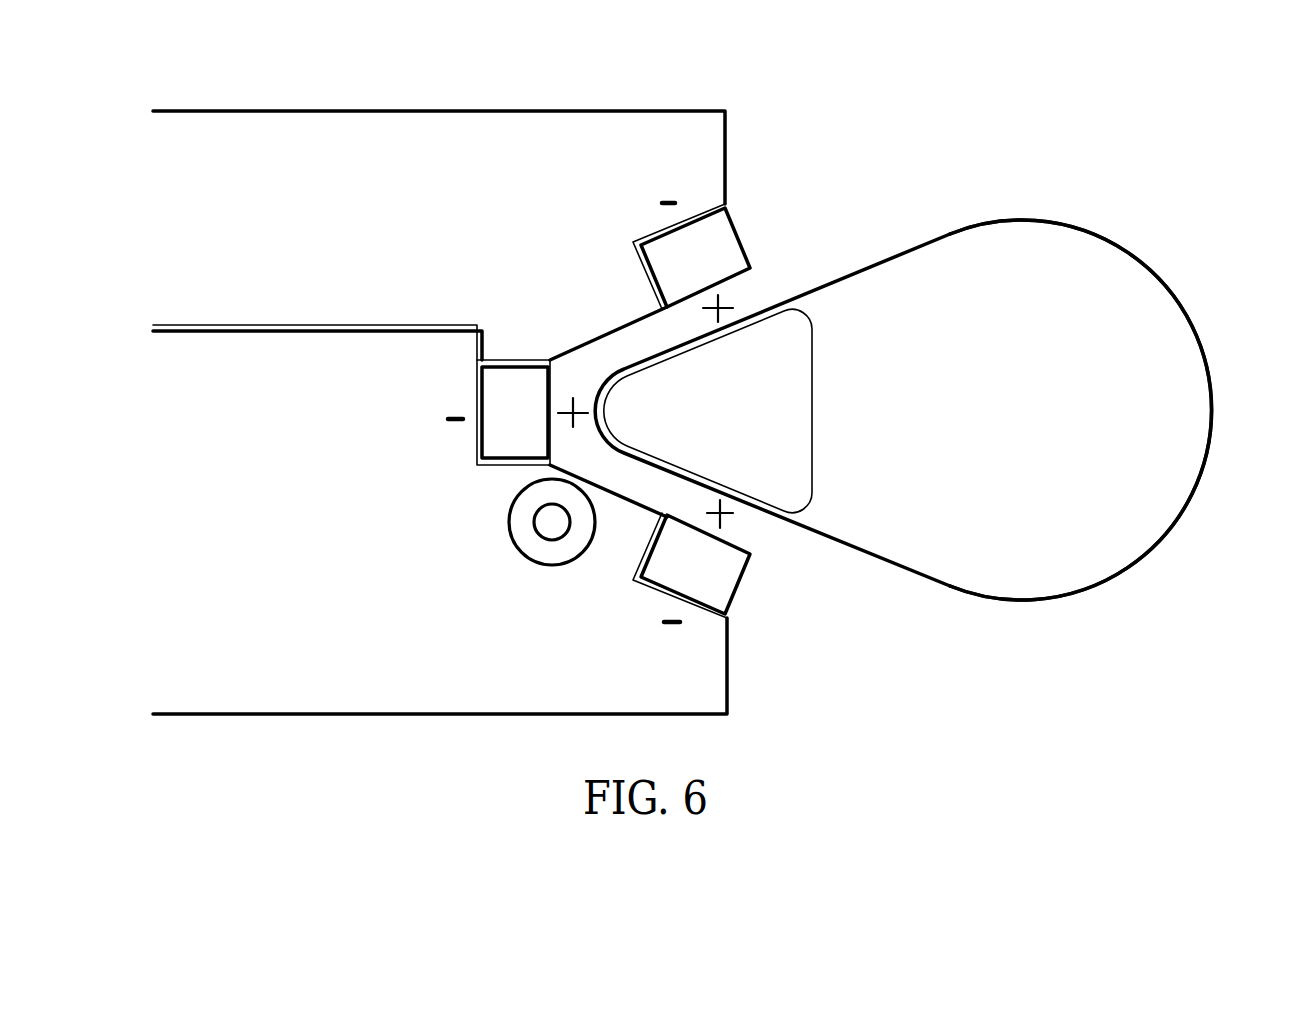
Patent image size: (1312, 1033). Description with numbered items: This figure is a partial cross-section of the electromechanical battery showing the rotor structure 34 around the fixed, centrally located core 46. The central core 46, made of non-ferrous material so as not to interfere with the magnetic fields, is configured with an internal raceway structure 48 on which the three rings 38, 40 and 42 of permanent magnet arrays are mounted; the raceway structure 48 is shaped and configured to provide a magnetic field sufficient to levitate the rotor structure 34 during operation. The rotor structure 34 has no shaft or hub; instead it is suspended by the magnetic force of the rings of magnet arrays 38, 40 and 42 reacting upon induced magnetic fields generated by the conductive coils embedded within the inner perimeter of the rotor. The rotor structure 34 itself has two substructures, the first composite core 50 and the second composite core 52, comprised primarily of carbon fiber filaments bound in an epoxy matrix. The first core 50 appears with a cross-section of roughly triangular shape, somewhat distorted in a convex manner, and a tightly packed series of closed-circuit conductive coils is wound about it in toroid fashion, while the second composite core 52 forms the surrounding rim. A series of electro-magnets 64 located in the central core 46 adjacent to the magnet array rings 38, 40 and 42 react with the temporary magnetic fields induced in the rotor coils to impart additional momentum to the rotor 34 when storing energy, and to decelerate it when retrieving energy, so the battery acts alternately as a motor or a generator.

The rotor structure 34 is at (1203, 318).
The ring of permanent magnet array 38 is at (717, 250).
The ring of permanent magnet array 40 is at (498, 433).
The ring of permanent magnet array 42 is at (720, 584).
The central core 46 is at (398, 703).
The internal raceway structure 48 is at (600, 328).
The first composite core 50 is at (787, 342).
The second composite core 52 is at (1027, 250).
The electro-magnets 64 is at (545, 555).